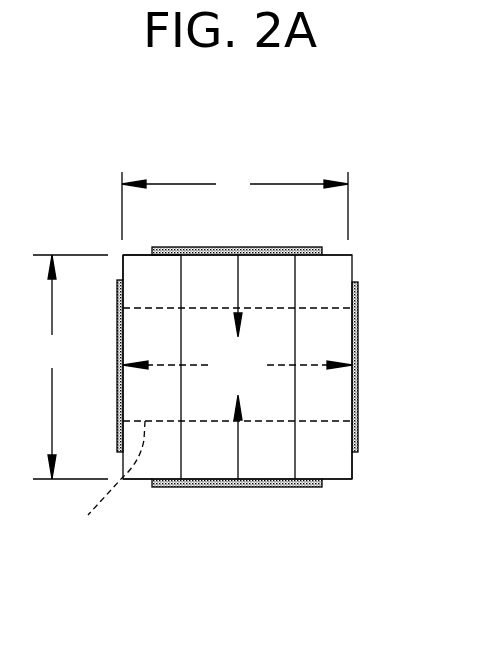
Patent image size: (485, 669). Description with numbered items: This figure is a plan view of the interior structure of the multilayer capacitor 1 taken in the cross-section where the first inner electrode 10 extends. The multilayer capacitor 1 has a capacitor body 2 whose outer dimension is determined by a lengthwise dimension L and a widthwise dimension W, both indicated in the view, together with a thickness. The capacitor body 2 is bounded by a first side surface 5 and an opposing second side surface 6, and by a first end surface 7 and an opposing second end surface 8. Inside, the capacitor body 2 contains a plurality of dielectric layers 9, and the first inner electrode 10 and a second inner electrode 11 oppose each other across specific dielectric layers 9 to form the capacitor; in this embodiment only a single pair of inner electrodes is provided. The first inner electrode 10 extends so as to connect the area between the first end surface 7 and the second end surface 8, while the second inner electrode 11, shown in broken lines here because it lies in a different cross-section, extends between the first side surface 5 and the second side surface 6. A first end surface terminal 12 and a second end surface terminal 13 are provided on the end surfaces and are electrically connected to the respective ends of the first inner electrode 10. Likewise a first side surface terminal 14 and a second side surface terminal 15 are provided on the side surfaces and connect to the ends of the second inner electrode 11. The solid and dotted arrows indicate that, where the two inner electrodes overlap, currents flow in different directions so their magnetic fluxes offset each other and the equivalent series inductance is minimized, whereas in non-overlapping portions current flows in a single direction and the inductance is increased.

The multilayer capacitor 1 is at (108, 163).
The capacitor body 2 is at (370, 268).
The first side surface 5 is at (122, 265).
The second side surface 6 is at (353, 470).
The first end surface 7 is at (133, 481).
The second end surface 8 is at (332, 254).
The dielectric layers 9 is at (330, 465).
The first inner electrode 10 is at (181, 281).
The second inner electrode 11 is at (111, 481).
The first end surface terminal 12 is at (210, 487).
The second end surface terminal 13 is at (182, 247).
The first side surface terminal 14 is at (118, 405).
The second side surface terminal 15 is at (358, 366).